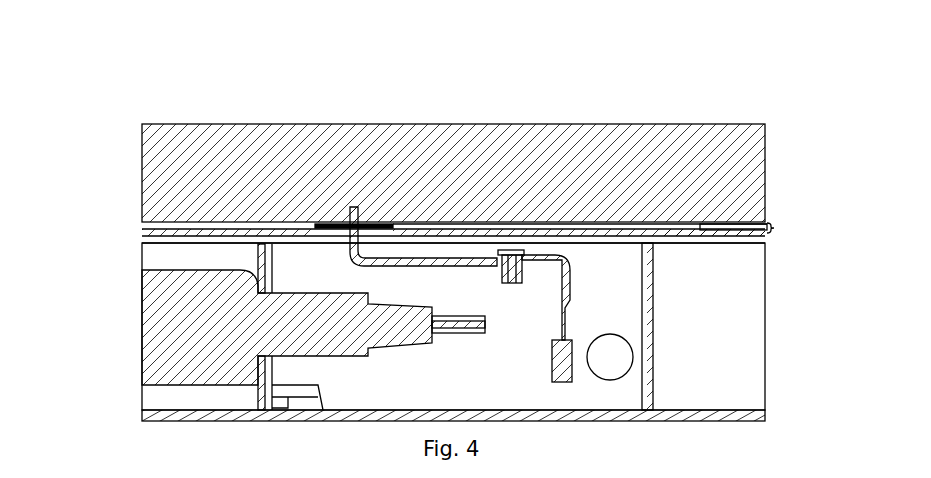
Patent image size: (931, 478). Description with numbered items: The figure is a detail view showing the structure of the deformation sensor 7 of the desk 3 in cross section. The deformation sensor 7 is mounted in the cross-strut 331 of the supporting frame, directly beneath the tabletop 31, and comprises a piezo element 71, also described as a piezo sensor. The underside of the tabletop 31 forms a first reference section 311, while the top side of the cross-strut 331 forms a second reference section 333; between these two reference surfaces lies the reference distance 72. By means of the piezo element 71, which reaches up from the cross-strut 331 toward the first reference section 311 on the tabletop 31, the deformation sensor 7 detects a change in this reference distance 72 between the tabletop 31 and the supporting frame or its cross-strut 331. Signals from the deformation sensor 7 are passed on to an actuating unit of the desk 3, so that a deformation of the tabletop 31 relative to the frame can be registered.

The desk 3 is at (667, 105).
The tabletop 31 is at (253, 137).
The first reference section 311 is at (334, 223).
The cross-strut 331 is at (148, 233).
The second reference section 333 is at (333, 231).
The deformation sensor 7 is at (605, 320).
The piezo element 71 is at (355, 198).
The reference distance 72 is at (603, 229).